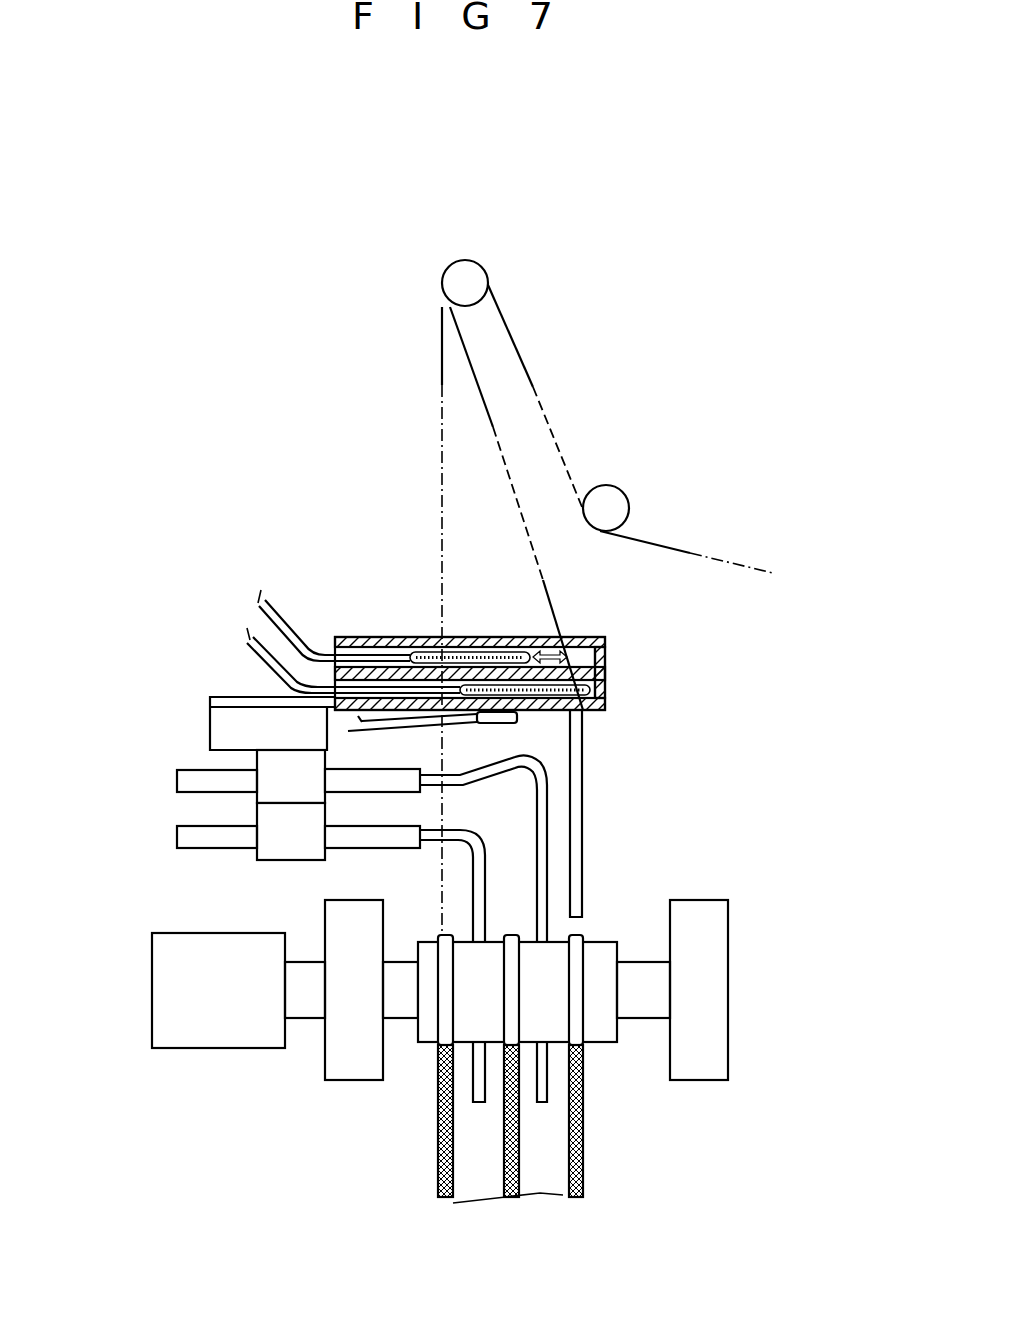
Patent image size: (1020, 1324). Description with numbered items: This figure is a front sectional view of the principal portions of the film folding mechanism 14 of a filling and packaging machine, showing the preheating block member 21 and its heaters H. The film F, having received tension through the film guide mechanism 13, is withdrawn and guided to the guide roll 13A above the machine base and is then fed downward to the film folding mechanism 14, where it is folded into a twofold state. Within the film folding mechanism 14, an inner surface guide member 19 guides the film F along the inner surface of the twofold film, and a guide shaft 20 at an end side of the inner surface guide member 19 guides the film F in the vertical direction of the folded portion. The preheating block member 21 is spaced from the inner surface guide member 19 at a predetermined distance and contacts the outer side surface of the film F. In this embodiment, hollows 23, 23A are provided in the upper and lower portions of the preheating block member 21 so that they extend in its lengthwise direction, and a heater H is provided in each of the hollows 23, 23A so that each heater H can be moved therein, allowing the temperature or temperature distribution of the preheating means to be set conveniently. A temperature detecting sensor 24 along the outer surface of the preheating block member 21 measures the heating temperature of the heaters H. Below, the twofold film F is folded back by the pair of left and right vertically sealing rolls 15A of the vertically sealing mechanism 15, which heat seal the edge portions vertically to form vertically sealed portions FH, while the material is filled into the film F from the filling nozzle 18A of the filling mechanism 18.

The film guide mechanism 13 is at (486, 597).
The guide roll 13A is at (465, 285).
The film F is at (693, 553).
The film folding mechanism 14 is at (258, 555).
The hollow 23 is at (355, 648).
The hollow 23A is at (402, 682).
The preheating block member 21 is at (493, 638).
The heater H is at (515, 657).
The temperature detecting sensor 24 is at (490, 723).
The inner surface guide member 19 is at (300, 703).
The filling mechanism 18 is at (398, 899).
The filling nozzle 18A is at (480, 913).
The guide shaft 20 is at (575, 822).
The vertically sealing mechanism 15 is at (451, 966).
The vertically sealing roll 15A is at (447, 995).
The vertically sealed portion FH is at (447, 1143).